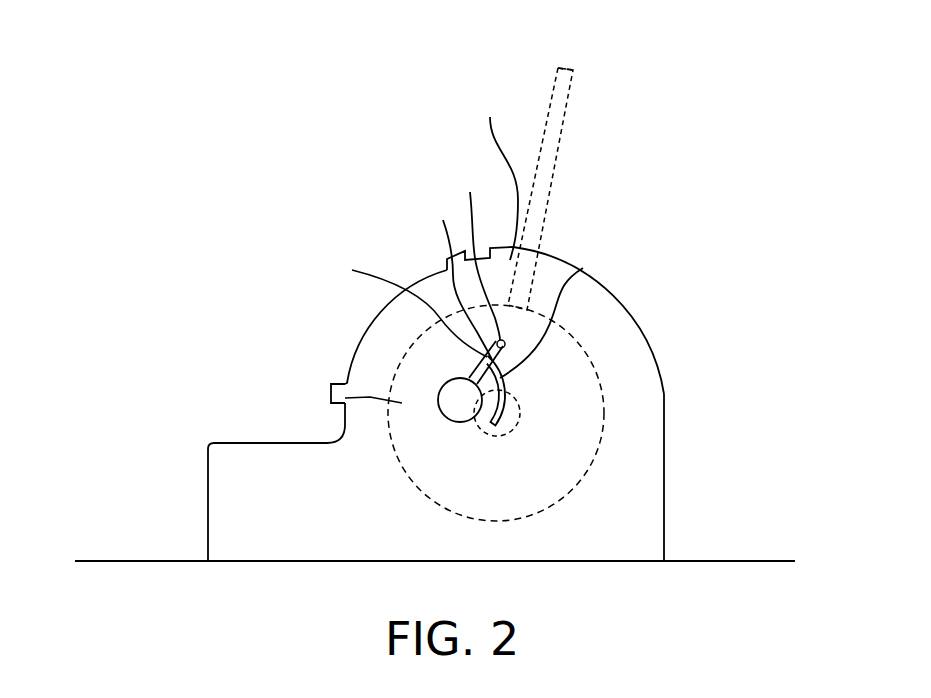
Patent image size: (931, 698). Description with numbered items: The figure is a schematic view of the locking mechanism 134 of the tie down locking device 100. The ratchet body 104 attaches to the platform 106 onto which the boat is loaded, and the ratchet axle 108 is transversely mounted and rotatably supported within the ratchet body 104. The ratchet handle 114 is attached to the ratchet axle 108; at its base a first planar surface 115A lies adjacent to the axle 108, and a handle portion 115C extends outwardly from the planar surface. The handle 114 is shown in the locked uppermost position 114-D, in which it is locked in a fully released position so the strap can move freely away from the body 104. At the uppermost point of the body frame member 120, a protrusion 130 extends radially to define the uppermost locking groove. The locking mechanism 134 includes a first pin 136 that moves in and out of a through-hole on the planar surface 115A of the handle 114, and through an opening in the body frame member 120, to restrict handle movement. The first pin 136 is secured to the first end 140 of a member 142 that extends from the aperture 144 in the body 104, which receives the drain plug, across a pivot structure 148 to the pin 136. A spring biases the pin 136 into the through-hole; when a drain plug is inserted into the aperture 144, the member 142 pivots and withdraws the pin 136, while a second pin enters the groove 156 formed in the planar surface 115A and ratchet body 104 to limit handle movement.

The tie down locking device 100 is at (766, 229).
The ratchet body 104 is at (287, 511).
The platform 106 is at (132, 561).
The ratchet axle 108 is at (520, 410).
The ratchet handle 114 is at (543, 192).
The locked uppermost position 114-D is at (567, 108).
The first planar surface 115A is at (345, 398).
The handle portion 115C is at (569, 66).
The body frame member 120 is at (664, 395).
The protrusion 130 is at (495, 176).
The locking mechanism 134 is at (310, 220).
The first pin 136 is at (452, 279).
The first end 140 is at (479, 296).
The member 142 is at (445, 266).
The aperture 144 is at (438, 396).
The pivot structure 148 is at (398, 310).
The groove 156 is at (583, 268).